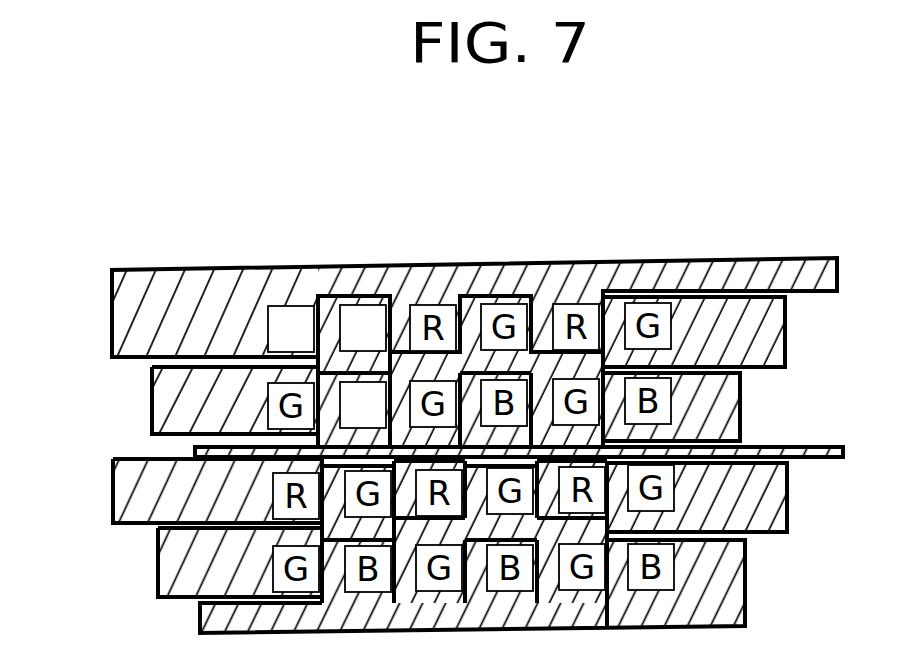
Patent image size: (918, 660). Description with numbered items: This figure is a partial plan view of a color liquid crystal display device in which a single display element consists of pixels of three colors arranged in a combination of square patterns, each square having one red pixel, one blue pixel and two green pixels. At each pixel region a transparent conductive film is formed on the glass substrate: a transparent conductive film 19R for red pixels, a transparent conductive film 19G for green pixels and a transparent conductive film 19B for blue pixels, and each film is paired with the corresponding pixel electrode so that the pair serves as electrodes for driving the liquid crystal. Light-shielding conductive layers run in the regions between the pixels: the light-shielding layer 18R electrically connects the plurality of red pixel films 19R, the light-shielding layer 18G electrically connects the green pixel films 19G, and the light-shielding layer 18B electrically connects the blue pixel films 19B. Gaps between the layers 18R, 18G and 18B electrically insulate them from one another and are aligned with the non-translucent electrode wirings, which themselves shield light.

The light-shielding conductive layer 18R is at (200, 282).
The light-shielding conductive layer 18G is at (336, 300).
The light-shielding conductive layer 18B is at (195, 450).
The transparent conductive film 19R is at (293, 309).
The transparent conductive film 19G is at (383, 306).
The transparent conductive film 19B is at (388, 380).